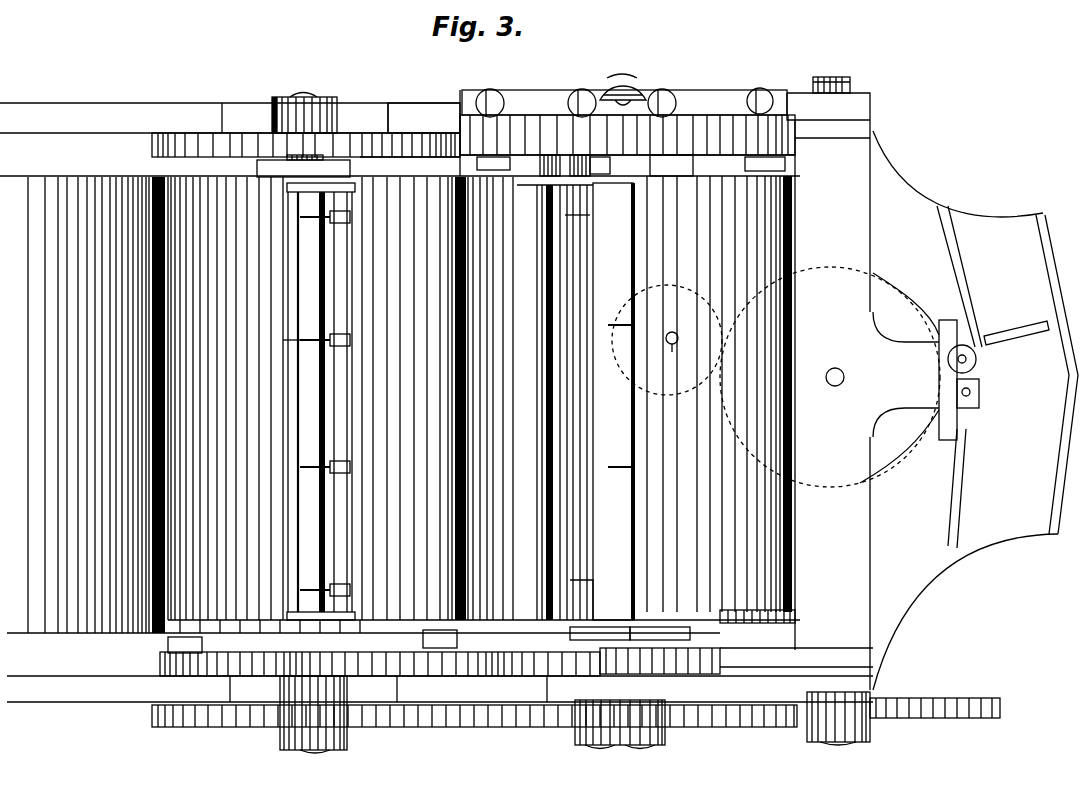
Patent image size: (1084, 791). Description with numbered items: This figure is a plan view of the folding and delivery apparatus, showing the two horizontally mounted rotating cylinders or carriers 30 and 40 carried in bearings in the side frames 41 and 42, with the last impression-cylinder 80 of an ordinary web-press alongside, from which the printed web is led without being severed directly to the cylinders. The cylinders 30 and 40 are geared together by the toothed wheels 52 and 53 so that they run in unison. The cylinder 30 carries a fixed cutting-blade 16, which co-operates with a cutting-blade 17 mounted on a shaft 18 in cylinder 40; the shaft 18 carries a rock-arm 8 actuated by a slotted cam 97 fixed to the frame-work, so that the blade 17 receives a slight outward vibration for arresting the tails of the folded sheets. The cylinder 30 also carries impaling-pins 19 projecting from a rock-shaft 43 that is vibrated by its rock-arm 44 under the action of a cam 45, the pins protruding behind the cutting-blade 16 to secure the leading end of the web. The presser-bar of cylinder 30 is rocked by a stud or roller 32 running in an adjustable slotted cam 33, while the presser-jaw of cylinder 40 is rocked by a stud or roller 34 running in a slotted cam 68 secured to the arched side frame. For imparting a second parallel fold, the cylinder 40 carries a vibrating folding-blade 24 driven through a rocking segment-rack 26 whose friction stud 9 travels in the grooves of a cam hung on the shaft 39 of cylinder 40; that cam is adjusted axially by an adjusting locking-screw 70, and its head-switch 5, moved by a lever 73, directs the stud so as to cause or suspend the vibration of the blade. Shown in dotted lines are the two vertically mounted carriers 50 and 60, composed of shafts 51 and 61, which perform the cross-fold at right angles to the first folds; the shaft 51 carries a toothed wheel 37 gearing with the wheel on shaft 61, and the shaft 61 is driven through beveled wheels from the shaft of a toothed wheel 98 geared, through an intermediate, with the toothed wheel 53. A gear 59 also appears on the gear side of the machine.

The head-switch 5 is at (600, 165).
The rock-arm 8 is at (630, 634).
The friction stud or roller 9 is at (593, 152).
The cutting-blade 16 is at (298, 290).
The cutting-blade 17 is at (614, 401).
The shaft 18 is at (586, 553).
The impaling-pins 19 is at (283, 340).
The vibrating folding-blade 24 is at (555, 402).
The rocking segment-rack 26 is at (549, 158).
The rotating cylinder or carrier 30 is at (437, 398).
The stud or roller 32 is at (168, 650).
The slotted cam 33 is at (380, 664).
The stud or roller 34 is at (512, 163).
The toothed wheel 37 is at (622, 360).
The shaft 39 is at (622, 74).
The rotating cylinder or carrier 40 is at (719, 394).
The side frame 41 is at (440, 675).
The side frame 42 is at (424, 118).
The rock-shaft 43 is at (356, 243).
The rock-arm 44 is at (258, 167).
The cam 45 is at (306, 125).
The rotating carrier 50 is at (667, 340).
The shaft 51 is at (670, 349).
The toothed wheel 52 is at (404, 733).
The toothed wheel 53 is at (737, 733).
The gear 59 is at (757, 625).
The rotating carrier 60 is at (849, 377).
The shaft 61 is at (844, 377).
The slotted cam 68 is at (627, 135).
The adjusting locking-screw 70 is at (626, 93).
The lever 73 is at (624, 102).
The last impression-cylinder 80 is at (155, 405).
The slotted cam 97 is at (660, 661).
The toothed wheel 98 is at (953, 725).